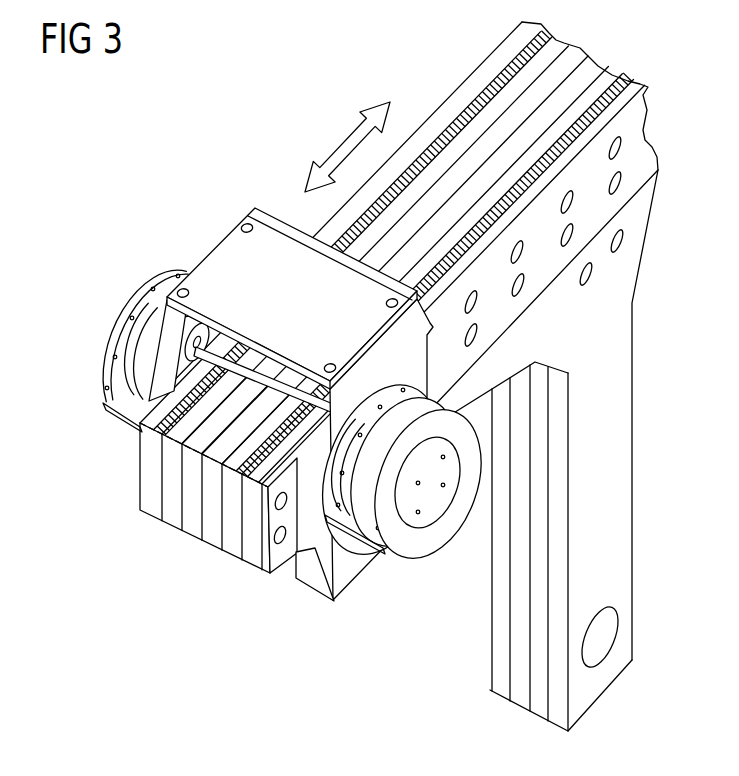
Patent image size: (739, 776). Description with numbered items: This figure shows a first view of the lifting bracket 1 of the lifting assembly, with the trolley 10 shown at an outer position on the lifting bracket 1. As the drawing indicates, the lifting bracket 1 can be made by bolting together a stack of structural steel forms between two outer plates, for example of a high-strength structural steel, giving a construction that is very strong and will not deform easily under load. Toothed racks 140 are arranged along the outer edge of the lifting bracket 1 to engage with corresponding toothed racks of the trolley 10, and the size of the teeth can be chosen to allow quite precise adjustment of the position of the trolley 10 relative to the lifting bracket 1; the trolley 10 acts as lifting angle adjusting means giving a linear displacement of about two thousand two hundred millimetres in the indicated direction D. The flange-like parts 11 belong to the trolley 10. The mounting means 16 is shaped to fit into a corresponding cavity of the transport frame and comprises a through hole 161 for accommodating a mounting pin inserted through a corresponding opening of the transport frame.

The lifting bracket 1 is at (93, 282).
The trolley 10 is at (204, 227).
The flange 11 is at (163, 287).
The mounting means 16 is at (618, 516).
The toothed racks 140 is at (278, 443).
The through hole 161 is at (604, 628).